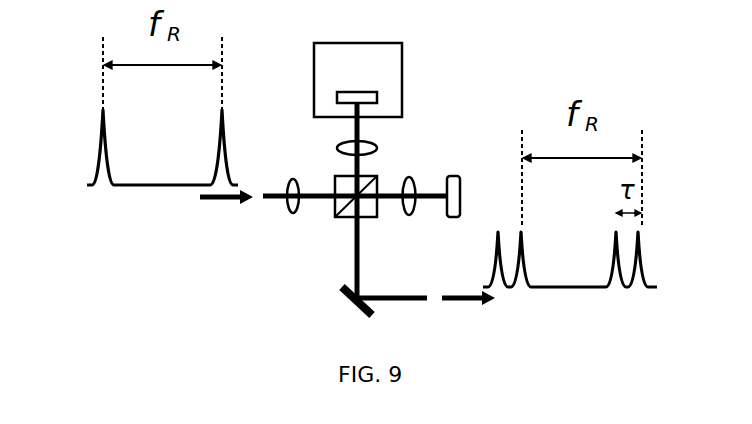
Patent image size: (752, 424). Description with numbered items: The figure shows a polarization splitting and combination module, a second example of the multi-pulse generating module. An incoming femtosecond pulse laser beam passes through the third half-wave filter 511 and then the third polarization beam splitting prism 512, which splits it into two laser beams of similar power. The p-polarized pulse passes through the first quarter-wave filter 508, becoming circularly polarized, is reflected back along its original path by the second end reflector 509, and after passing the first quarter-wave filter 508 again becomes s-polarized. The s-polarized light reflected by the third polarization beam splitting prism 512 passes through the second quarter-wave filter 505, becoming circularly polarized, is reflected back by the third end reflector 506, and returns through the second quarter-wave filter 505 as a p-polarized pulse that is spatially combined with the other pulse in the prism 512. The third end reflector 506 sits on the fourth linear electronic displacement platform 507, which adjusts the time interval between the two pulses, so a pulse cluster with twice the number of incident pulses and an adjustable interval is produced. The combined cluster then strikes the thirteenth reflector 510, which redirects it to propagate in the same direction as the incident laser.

The second quarter-wave filter 505 is at (336, 147).
The third end reflector 506 is at (338, 97).
The fourth linear electronic displacement platform 507 is at (340, 62).
The first quarter-wave filter 508 is at (411, 177).
The second end reflector 509 is at (453, 176).
The thirteenth reflector 510 is at (343, 293).
The third half-wave filter 511 is at (296, 214).
The third polarization beam splitting prism 512 is at (337, 217).